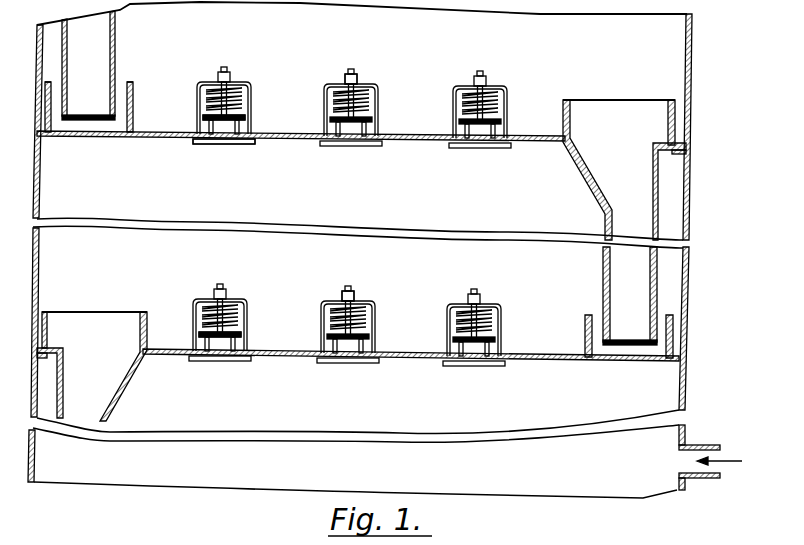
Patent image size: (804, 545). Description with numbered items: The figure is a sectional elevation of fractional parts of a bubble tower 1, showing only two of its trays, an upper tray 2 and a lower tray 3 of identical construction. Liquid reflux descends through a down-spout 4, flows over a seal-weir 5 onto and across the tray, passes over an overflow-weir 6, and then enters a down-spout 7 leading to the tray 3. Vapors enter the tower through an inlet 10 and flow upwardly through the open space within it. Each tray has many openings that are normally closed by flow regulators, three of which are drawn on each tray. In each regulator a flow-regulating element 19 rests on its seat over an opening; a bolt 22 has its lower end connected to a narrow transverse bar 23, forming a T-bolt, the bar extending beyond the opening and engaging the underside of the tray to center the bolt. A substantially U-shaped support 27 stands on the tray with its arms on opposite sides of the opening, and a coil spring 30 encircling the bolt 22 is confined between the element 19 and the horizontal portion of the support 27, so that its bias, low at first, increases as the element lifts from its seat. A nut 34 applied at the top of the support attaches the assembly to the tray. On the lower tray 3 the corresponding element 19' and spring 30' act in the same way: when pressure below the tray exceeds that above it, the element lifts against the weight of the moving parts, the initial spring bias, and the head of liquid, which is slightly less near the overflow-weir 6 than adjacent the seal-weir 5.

The bubble tower 1 is at (687, 290).
The tray 2 is at (145, 140).
The tray 3 is at (305, 360).
The down-spout 4 is at (102, 57).
The seal-weir 5 is at (131, 96).
The overflow-weir 6 is at (566, 113).
The down-spout 7 is at (668, 169).
The inlet 10 is at (712, 445).
The flow-regulating element 19 is at (239, 106).
The flow-regulating element 19' is at (241, 329).
The bolt 22 is at (348, 297).
The transverse bar 23 is at (206, 143).
The U-shaped support 27 is at (378, 104).
The spring 30 is at (225, 102).
The spring 30' is at (233, 322).
The nut 34 is at (358, 80).